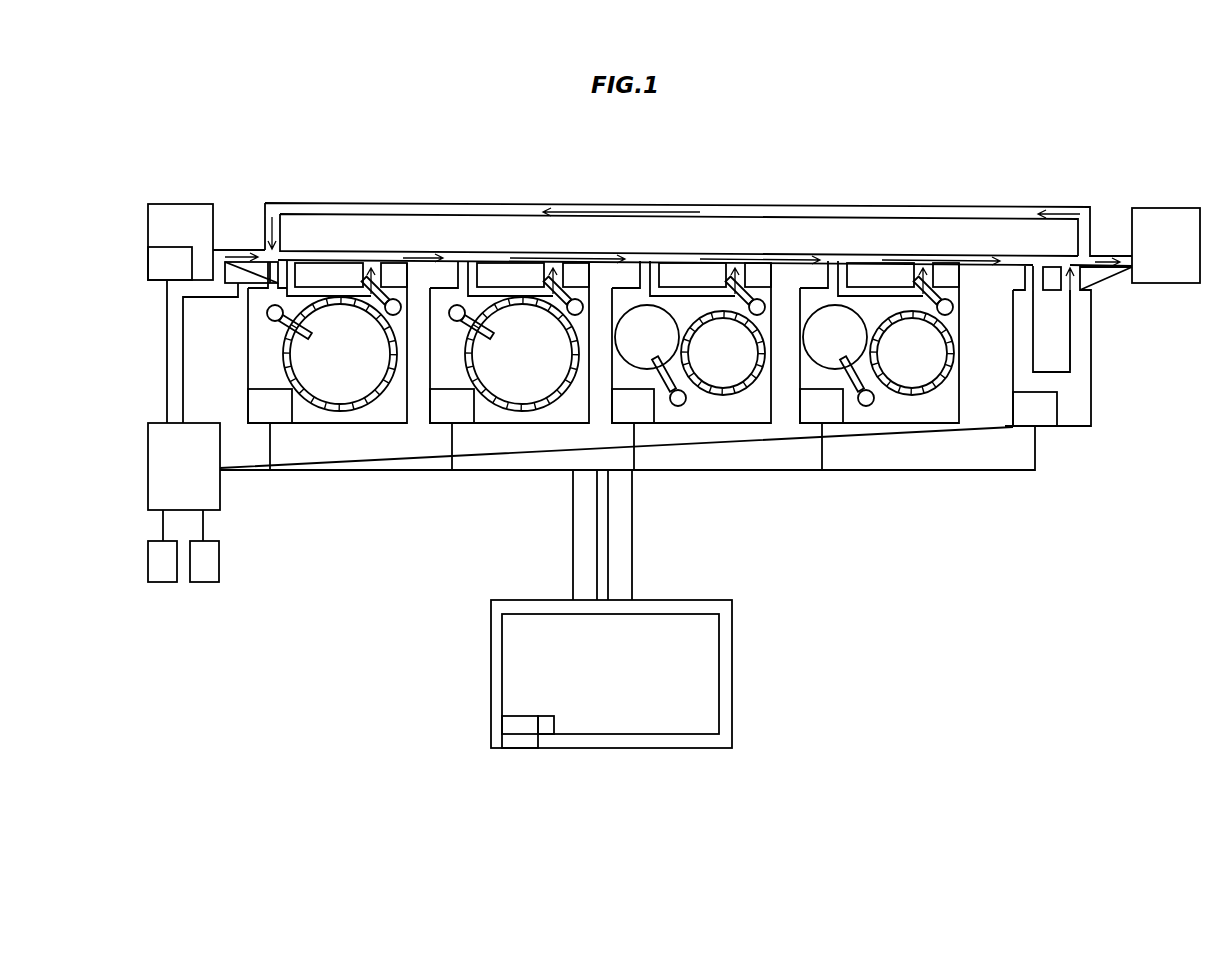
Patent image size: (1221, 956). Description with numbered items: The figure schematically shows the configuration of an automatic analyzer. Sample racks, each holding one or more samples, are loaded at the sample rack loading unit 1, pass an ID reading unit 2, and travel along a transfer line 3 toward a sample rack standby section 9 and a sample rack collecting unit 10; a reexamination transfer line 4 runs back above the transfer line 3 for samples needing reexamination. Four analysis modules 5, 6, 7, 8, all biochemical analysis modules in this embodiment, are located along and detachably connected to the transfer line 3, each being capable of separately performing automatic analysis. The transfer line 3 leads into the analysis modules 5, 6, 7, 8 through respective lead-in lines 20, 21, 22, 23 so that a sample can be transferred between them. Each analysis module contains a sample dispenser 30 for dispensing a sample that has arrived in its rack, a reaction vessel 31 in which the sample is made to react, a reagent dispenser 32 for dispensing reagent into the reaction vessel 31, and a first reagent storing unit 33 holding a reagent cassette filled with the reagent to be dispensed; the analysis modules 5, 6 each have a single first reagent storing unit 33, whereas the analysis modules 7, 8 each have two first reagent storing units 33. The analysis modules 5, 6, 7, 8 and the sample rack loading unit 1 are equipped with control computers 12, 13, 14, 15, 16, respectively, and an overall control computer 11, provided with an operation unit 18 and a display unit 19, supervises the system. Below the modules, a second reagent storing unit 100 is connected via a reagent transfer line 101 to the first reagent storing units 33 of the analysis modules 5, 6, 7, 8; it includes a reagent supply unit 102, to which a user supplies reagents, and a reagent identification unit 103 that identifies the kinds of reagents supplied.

The sample rack loading unit 1 is at (178, 211).
The ID reading unit 2 is at (235, 261).
The transfer line 3 is at (460, 257).
The reexamination transfer line 4 is at (536, 206).
The analysis module 5 is at (327, 338).
The analysis module 6 is at (509, 338).
The analysis module 7 is at (691, 338).
The analysis module 8 is at (879, 338).
The sample rack standby section 9 is at (1080, 432).
The sample rack collecting unit 10 is at (1166, 208).
The overall control computer 11 is at (158, 468).
The control computer 12 is at (283, 413).
The control computer 13 is at (463, 413).
The control computer 14 is at (649, 413).
The control computer 15 is at (831, 413).
The control computer 16 is at (160, 261).
The operation unit 18 is at (163, 584).
The display unit 19 is at (204, 584).
The lead-in line 20 is at (320, 282).
The lead-in line 21 is at (502, 282).
The lead-in line 22 is at (682, 282).
The lead-in line 23 is at (872, 282).
The sample dispenser 30 is at (399, 300).
The reaction vessel 31 is at (337, 411).
The reagent dispenser 32 is at (267, 314).
The first reagent storing unit 33 is at (315, 361).
The second reagent storing unit 100 is at (725, 606).
The reagent transfer line 101 is at (573, 575).
The reagent supply unit 102 is at (513, 752).
The reagent identification unit 103 is at (547, 752).